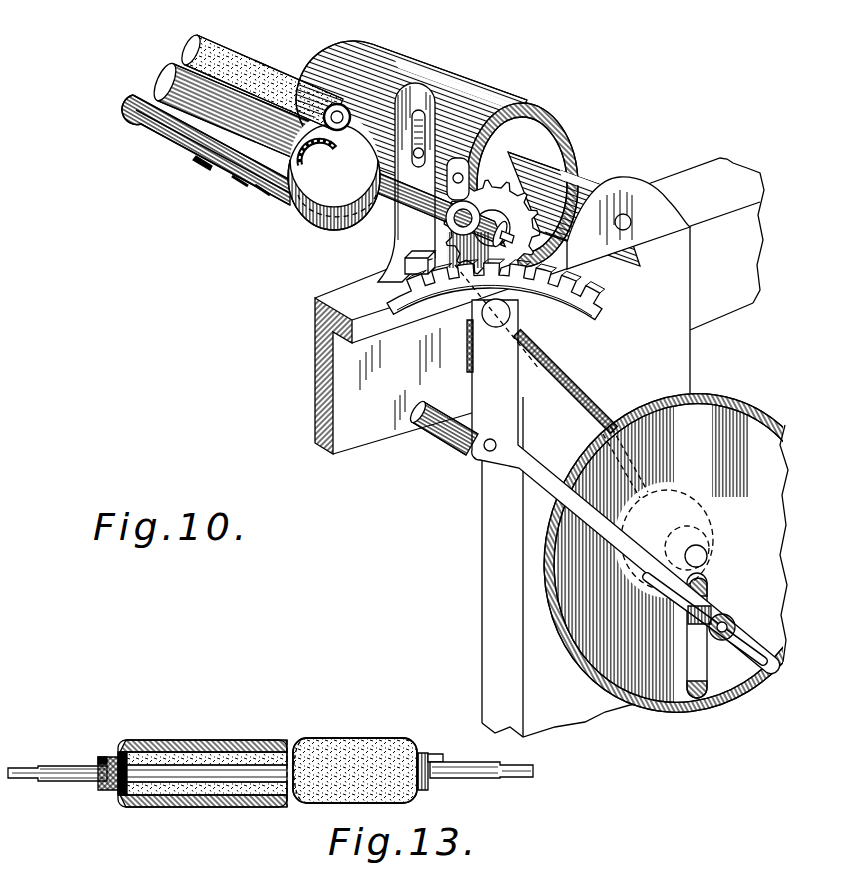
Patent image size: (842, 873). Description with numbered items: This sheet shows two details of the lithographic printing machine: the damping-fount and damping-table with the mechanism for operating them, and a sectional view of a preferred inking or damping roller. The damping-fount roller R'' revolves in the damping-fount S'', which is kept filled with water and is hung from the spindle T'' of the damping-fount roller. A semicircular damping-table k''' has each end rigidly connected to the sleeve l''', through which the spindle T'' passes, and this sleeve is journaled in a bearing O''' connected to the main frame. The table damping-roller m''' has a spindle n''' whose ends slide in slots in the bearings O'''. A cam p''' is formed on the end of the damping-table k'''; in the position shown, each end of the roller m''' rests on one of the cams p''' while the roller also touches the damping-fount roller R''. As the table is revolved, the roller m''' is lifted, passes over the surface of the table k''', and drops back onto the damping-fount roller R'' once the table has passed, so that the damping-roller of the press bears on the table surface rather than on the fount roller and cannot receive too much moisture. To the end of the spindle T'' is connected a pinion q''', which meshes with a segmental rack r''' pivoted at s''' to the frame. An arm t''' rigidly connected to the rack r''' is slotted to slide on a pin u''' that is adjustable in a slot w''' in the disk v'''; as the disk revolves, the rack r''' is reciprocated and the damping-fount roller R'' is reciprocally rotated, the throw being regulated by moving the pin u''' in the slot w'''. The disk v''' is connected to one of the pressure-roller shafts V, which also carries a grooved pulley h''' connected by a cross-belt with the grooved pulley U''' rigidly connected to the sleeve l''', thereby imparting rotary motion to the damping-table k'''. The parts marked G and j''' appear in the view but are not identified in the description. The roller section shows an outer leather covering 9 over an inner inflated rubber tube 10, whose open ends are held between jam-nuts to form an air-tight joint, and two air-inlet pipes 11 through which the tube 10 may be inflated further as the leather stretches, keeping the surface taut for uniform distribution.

In FIG. 10, the roller cylinder G is at (477, 83).
In FIG. 10, the grooved pulley U''' is at (591, 194).
In FIG. 10, the spindle n''' is at (474, 169).
In FIG. 10, the spindle T'' is at (506, 228).
In FIG. 10, the pinion q''' is at (497, 217).
In FIG. 10, the table damping-roller m''' is at (264, 70).
In FIG. 10, the semicircular damping-table k''' is at (246, 170).
In FIG. 10, the damping-fount roller R'' is at (174, 150).
In FIG. 10, the damping-fount S'' is at (168, 183).
In FIG. 10, the cam p''' is at (202, 194).
In FIG. 10, the rail element j''' is at (203, 228).
In FIG. 10, the sleeve l''' is at (500, 351).
In FIG. 10, the bearing O''' is at (392, 257).
In FIG. 10, the segmental rack r''' is at (529, 300).
In FIG. 10, the arm t''' is at (617, 469).
In FIG. 10, the pivot s''' is at (431, 443).
In FIG. 10, the pressure-roller shaft V is at (685, 556).
In FIG. 10, the disk v''' is at (679, 424).
In FIG. 10, the grooved pulley h''' is at (682, 481).
In FIG. 10, the slot w''' is at (709, 650).
In FIG. 10, the pin u''' is at (725, 597).
In FIG. 13, the air-inlet pipes 11 is at (112, 755).
In FIG. 13, the inflated rubber tube 10 is at (210, 750).
In FIG. 13, the outer leather covering 9 is at (263, 740).